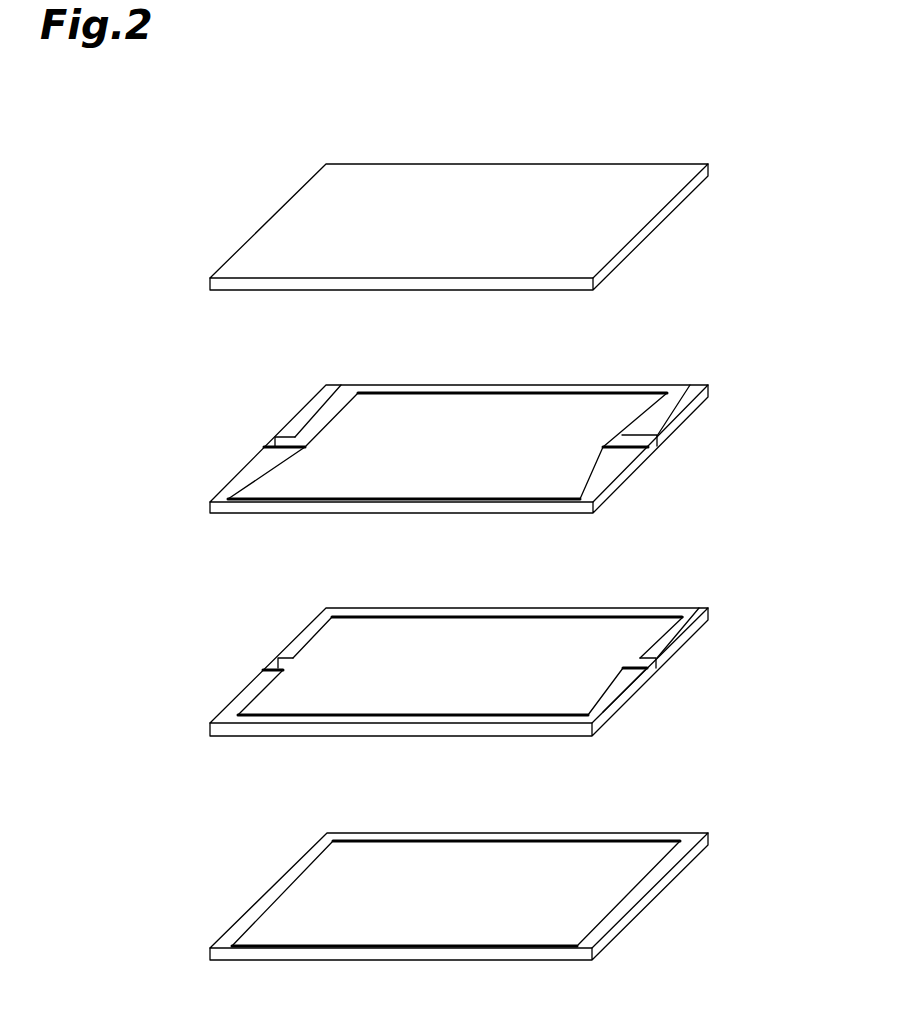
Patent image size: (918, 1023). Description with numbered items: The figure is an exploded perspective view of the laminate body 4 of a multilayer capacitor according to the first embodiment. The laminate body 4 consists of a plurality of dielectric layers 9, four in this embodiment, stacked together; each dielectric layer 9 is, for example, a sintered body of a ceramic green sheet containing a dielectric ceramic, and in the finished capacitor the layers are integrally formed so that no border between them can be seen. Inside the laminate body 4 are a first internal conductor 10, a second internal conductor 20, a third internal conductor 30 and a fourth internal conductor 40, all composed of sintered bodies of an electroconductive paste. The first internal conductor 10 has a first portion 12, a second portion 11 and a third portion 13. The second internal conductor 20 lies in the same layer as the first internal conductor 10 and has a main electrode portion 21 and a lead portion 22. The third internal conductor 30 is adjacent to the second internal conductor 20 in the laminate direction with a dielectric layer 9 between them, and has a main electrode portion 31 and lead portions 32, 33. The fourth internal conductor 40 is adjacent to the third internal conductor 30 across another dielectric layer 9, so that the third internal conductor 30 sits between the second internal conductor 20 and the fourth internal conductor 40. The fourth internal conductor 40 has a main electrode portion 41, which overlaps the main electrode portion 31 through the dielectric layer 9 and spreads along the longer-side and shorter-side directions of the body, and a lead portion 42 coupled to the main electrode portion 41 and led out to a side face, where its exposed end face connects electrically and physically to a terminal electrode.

The laminate body 4 is at (117, 164).
The dielectric layer 9 is at (622, 265).
The first internal conductor 10 is at (469, 425).
The second portion 11 is at (493, 386).
The first portion 12 is at (278, 440).
The third portion 13 is at (647, 432).
The second internal conductor 20 is at (434, 476).
The main electrode portion 21 is at (413, 442).
The lead portion 22 is at (468, 492).
The third internal conductor 30 is at (469, 692).
The main electrode portion 31 is at (477, 702).
The lead portion 32 is at (278, 662).
The lead portion 33 is at (647, 652).
The fourth internal conductor 40 is at (456, 920).
The main electrode portion 41 is at (413, 890).
The lead portion 42 is at (468, 938).